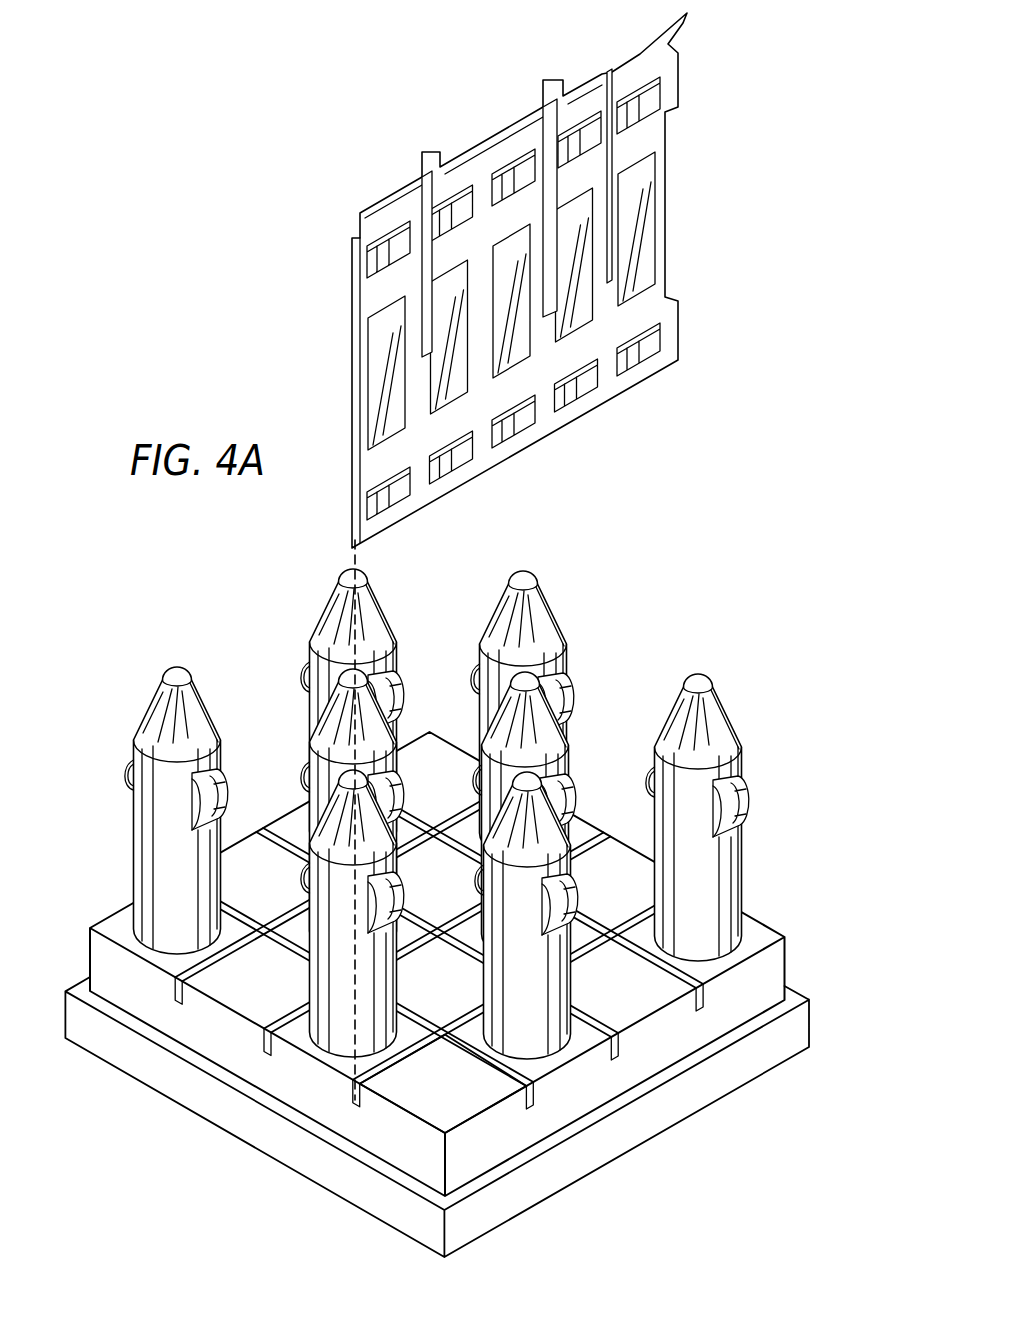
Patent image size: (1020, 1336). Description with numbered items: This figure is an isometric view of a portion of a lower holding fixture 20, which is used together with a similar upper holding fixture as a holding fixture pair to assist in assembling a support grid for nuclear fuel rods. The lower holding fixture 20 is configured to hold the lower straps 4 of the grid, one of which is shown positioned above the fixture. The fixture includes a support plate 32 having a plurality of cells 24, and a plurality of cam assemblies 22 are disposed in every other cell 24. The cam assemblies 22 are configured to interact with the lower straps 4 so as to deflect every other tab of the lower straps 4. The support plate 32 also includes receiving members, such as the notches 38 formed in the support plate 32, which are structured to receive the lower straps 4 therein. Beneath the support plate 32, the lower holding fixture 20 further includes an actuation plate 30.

The lower strap 4 is at (558, 473).
The lower holding fixture 20 is at (186, 592).
The cam assembly 22 is at (320, 715).
The cell 24 is at (480, 1100).
The actuation plate 30 is at (288, 1150).
The support plate 32 is at (242, 1055).
The notch 38 is at (403, 1033).